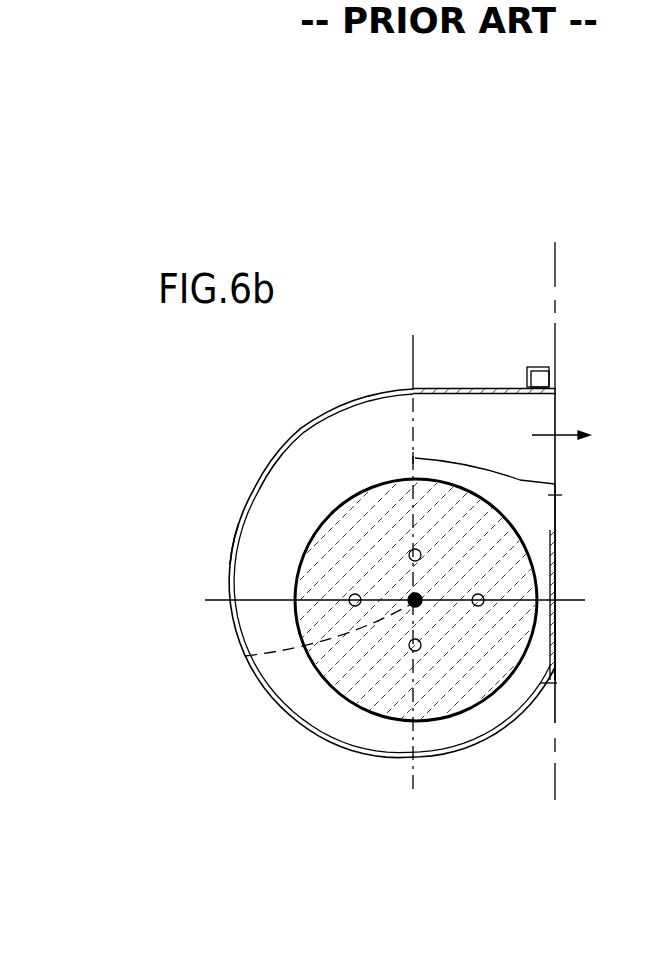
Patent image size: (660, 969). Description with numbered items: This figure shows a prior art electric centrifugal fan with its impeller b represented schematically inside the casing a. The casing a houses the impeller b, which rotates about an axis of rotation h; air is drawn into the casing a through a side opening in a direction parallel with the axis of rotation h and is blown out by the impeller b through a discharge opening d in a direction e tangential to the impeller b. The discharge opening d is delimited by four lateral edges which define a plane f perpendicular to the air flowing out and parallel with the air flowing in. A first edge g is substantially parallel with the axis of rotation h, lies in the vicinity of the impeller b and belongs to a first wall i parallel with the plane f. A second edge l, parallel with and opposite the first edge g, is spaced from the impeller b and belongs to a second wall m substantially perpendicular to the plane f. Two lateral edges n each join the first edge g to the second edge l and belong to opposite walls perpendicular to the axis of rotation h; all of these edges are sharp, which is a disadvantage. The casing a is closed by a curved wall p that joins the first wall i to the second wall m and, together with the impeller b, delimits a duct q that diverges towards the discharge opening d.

The casing a is at (292, 427).
The curved wall p is at (232, 533).
The second wall m is at (482, 385).
The plane f is at (555, 263).
The second edge l is at (556, 390).
The direction e is at (552, 423).
The lateral edges n is at (557, 457).
The discharge opening d is at (552, 495).
The first edge g is at (557, 530).
The first wall i is at (560, 577).
The impeller b is at (488, 686).
The axis of rotation h is at (245, 656).
The duct q is at (327, 479).